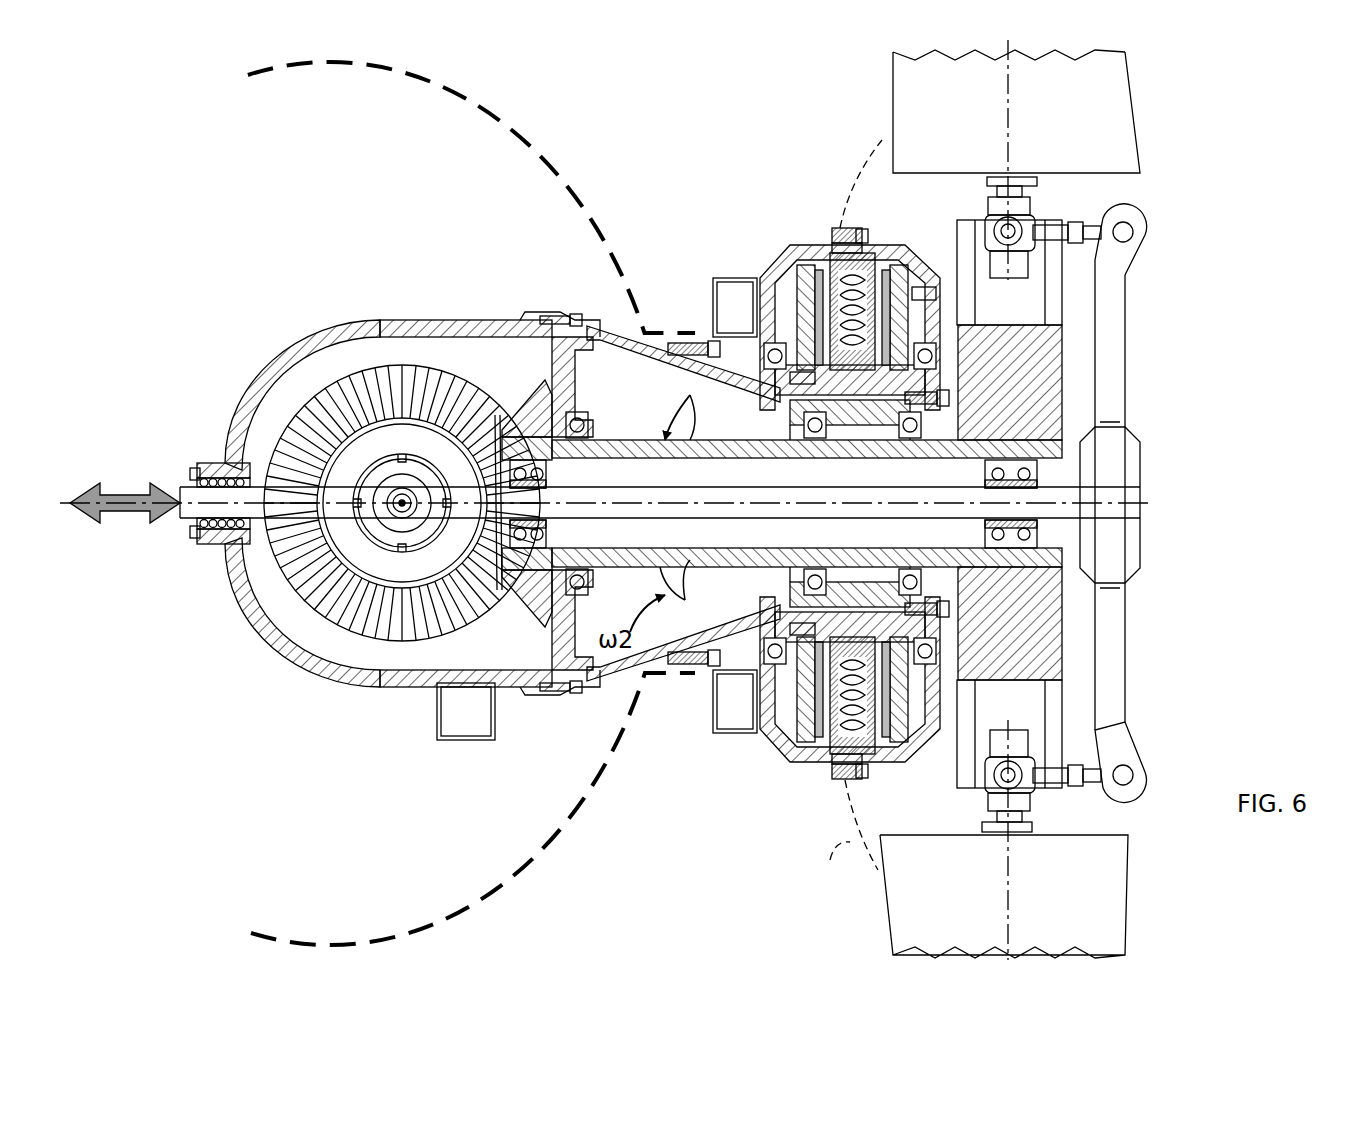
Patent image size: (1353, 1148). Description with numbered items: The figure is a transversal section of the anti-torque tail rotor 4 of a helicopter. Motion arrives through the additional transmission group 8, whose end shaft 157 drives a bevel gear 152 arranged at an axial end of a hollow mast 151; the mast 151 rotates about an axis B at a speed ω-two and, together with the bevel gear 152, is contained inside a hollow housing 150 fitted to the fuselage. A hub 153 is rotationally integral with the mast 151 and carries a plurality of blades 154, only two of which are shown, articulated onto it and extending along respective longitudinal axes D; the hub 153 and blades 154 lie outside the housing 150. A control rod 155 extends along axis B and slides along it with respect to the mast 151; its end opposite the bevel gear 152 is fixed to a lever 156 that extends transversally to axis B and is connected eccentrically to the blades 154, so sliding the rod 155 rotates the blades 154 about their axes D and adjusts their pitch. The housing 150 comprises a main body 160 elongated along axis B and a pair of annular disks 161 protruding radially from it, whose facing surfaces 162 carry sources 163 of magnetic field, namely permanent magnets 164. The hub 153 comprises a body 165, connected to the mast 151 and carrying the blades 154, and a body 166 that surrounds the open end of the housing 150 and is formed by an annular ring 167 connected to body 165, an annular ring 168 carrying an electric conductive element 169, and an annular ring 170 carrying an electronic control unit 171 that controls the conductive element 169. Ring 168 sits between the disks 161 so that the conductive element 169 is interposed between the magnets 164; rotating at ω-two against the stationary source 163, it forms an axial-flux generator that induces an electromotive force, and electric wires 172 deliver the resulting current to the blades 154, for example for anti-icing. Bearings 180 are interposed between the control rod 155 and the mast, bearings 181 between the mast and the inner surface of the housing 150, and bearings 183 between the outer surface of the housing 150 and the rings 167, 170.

The anti-torque tail rotor 4 is at (688, 232).
The additional transmission group 8 is at (385, 318).
The hollow housing 150 is at (362, 680).
The hollow mast 151 is at (740, 567).
The bevel gear 152 is at (540, 575).
The hub 153 is at (1030, 375).
The blades 154 is at (1145, 125).
The control rod 155 is at (1065, 510).
The lever 156 is at (1110, 685).
The end shaft 157 is at (390, 460).
The main body 160 is at (572, 300).
The annular disks 161 is at (805, 290).
The surface 162 is at (825, 260).
The source of magnetic field 163 is at (800, 372).
The permanent magnets 164 is at (812, 315).
The body 165 is at (1010, 632).
The body 166 is at (790, 770).
The annular ring 167 is at (925, 740).
The annular ring 168 is at (870, 740).
The electric conductive element 169 is at (855, 345).
The annular ring 170 is at (800, 752).
The electronic control unit 171 is at (728, 312).
The electric wires 172 is at (838, 509).
The bearings 180 is at (545, 470).
The bearings 181 is at (578, 425).
The bearings 183 is at (770, 357).
The axis B is at (1150, 503).
The longitudinal axes D is at (1008, 115).